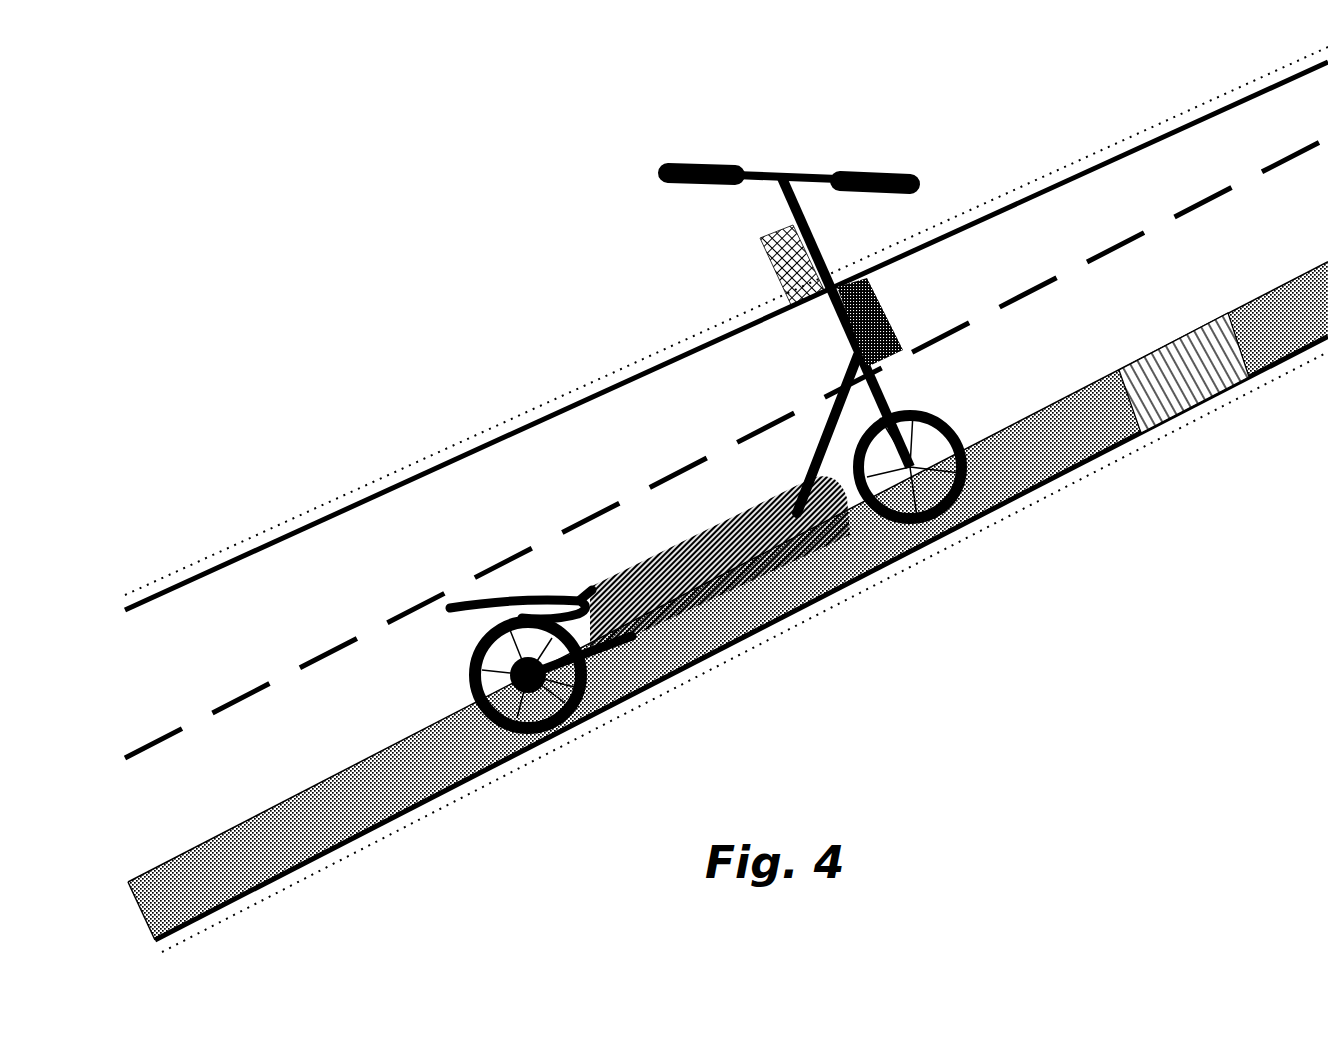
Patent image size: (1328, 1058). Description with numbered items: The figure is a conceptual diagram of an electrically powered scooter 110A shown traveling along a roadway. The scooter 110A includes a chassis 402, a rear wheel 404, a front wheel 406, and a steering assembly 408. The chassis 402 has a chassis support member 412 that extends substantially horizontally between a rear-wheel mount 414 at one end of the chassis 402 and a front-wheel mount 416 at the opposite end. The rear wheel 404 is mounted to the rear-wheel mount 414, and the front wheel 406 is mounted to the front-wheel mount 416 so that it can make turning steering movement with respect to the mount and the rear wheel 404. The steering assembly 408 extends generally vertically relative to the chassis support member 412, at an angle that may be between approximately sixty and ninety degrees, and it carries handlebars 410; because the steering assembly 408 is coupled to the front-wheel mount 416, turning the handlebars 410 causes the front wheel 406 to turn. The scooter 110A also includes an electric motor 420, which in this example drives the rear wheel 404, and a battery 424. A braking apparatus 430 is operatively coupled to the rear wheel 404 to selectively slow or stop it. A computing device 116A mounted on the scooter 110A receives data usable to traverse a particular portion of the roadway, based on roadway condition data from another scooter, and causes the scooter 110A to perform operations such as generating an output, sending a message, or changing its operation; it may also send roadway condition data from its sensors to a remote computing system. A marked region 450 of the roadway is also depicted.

The electrically powered scooter 110A is at (529, 239).
The computing device 116A is at (777, 274).
The chassis 402 is at (768, 654).
The rear wheel 404 is at (472, 672).
The front wheel 406 is at (948, 418).
The steering assembly 408 is at (781, 172).
The handlebars 410 is at (887, 171).
The chassis support member 412 is at (727, 513).
The rear-wheel mount 414 is at (582, 588).
The front-wheel mount 416 is at (898, 437).
The electric motor 420 is at (587, 683).
The battery 424 is at (877, 292).
The braking apparatus 430 is at (475, 600).
The parking zone marking 450 is at (1181, 341).